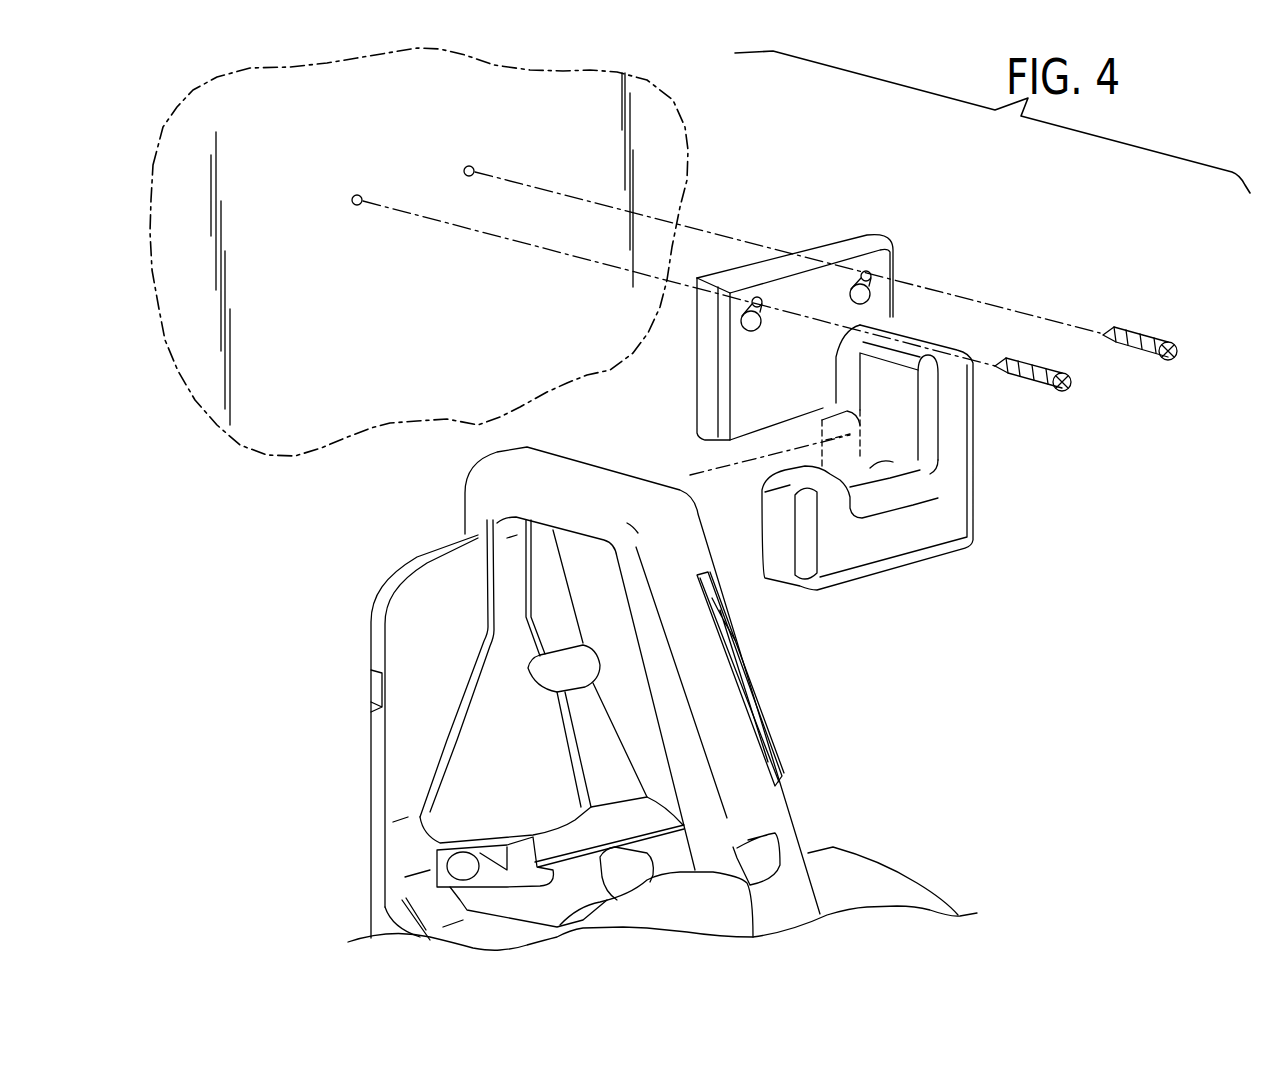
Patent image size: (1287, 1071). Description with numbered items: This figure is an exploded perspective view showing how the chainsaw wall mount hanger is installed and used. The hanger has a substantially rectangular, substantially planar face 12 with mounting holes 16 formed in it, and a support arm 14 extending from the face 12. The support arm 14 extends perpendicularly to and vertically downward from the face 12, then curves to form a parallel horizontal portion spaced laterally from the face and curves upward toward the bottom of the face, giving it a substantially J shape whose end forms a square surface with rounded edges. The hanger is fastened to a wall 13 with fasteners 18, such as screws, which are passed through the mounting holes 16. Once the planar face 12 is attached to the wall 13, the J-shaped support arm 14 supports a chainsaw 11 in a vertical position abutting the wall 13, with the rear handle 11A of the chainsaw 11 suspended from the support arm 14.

The chainsaw 11 is at (673, 698).
The rear handle 11A is at (722, 582).
The face 12 is at (765, 316).
The wall 13 is at (288, 409).
The support arm 14 is at (893, 537).
The mounting holes 16 is at (760, 318).
The fasteners 18 is at (1152, 360).